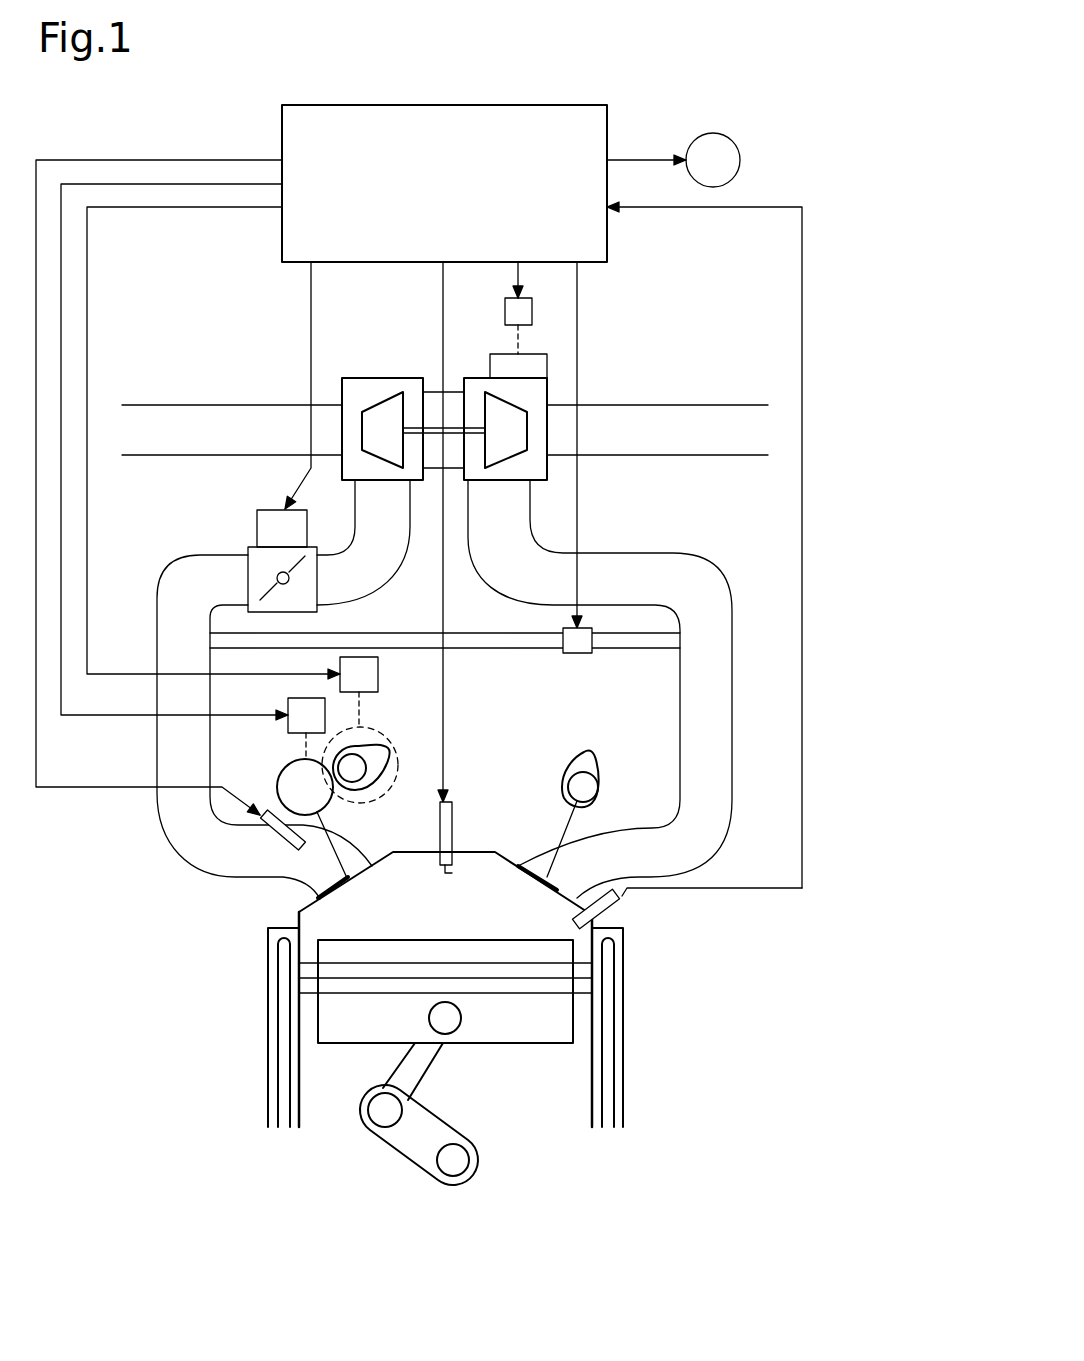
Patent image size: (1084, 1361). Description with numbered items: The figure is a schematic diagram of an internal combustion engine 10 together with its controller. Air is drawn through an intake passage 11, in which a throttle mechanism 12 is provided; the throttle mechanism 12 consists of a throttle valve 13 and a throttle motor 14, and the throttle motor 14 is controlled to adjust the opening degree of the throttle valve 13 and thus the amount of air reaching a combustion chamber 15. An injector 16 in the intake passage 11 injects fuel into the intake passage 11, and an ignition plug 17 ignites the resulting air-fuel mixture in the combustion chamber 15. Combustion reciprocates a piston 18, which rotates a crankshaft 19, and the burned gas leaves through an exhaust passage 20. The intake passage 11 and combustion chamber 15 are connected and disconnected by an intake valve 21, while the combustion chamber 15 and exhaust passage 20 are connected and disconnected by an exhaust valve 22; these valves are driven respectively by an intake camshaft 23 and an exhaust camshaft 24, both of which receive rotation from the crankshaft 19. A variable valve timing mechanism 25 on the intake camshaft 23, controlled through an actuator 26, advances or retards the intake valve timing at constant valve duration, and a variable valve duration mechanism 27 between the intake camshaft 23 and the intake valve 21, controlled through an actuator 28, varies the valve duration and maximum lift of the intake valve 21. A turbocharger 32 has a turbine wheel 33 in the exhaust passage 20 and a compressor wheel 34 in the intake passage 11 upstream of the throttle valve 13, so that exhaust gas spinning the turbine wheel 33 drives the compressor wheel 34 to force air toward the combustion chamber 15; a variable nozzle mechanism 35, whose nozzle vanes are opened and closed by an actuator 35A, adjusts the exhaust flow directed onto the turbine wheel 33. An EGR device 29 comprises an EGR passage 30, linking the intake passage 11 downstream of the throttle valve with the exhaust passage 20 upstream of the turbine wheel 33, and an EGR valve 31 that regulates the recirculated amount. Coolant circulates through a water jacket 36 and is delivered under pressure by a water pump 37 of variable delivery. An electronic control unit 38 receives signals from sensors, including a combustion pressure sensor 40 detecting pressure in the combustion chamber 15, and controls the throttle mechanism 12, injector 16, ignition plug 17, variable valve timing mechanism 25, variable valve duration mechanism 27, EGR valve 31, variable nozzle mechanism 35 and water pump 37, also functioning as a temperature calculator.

The internal combustion engine 10 is at (707, 1010).
The intake passage 11 is at (209, 412).
The throttle mechanism 12 is at (228, 541).
The throttle valve 13 is at (253, 588).
The throttle motor 14 is at (257, 527).
The combustion chamber 15 is at (430, 931).
The injector 16 is at (276, 843).
The ignition plug 17 is at (453, 825).
The piston 18 is at (507, 1045).
The crankshaft 19 is at (478, 1160).
The exhaust passage 20 is at (674, 412).
The intake valve 21 is at (336, 884).
The exhaust valve 22 is at (514, 880).
The intake camshaft 23 is at (357, 777).
The exhaust camshaft 24 is at (569, 786).
The variable valve timing mechanism 25 is at (386, 729).
The actuator 26 is at (378, 673).
The variable valve duration mechanism 27 is at (278, 771).
The actuator 28 is at (288, 700).
The exhaust gas recirculation (EGR) device 29 is at (445, 684).
The EGR passage 30 is at (533, 643).
The EGR valve 31 is at (578, 665).
The turbocharger 32 is at (444, 418).
The turbine wheel 33 is at (508, 484).
The compressor wheel 34 is at (381, 481).
The variable nozzle mechanism 35 is at (490, 368).
The actuator 35A is at (505, 312).
The water jacket 36 is at (284, 1089).
The water pump 37 is at (741, 160).
The electronic control unit 38 is at (282, 125).
The combustion pressure sensor 40 is at (609, 911).